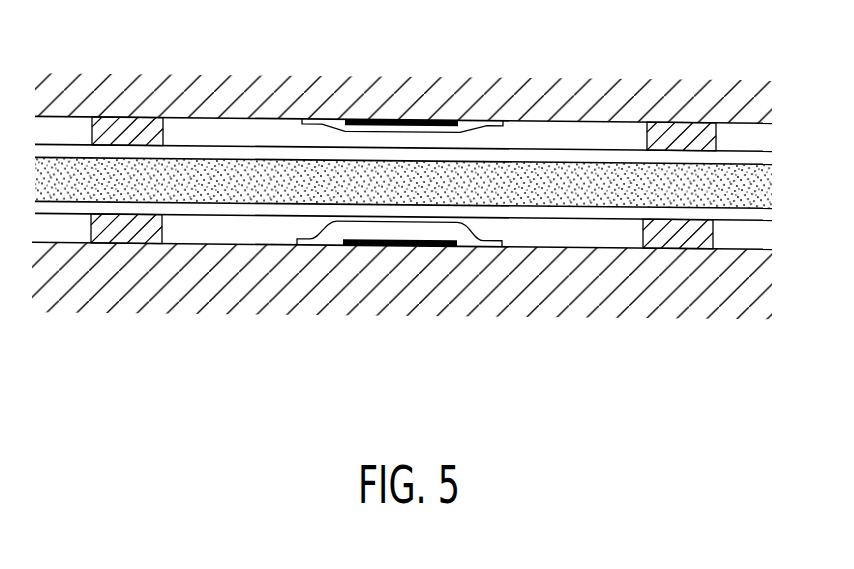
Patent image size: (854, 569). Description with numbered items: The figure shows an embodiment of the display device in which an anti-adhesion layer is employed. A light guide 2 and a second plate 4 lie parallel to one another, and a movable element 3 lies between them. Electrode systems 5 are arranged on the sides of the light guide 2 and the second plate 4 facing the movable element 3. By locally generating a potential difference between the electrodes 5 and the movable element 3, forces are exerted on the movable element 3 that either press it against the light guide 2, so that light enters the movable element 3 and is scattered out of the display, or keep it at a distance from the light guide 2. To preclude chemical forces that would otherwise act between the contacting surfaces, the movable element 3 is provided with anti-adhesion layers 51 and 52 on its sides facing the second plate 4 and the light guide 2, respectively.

The light guide 2 is at (580, 296).
The movable element 3 is at (756, 189).
The second plate 4 is at (594, 93).
The electrode system 5 is at (390, 247).
The anti-adhesion layer 51 is at (742, 153).
The anti-adhesion layer 52 is at (738, 213).